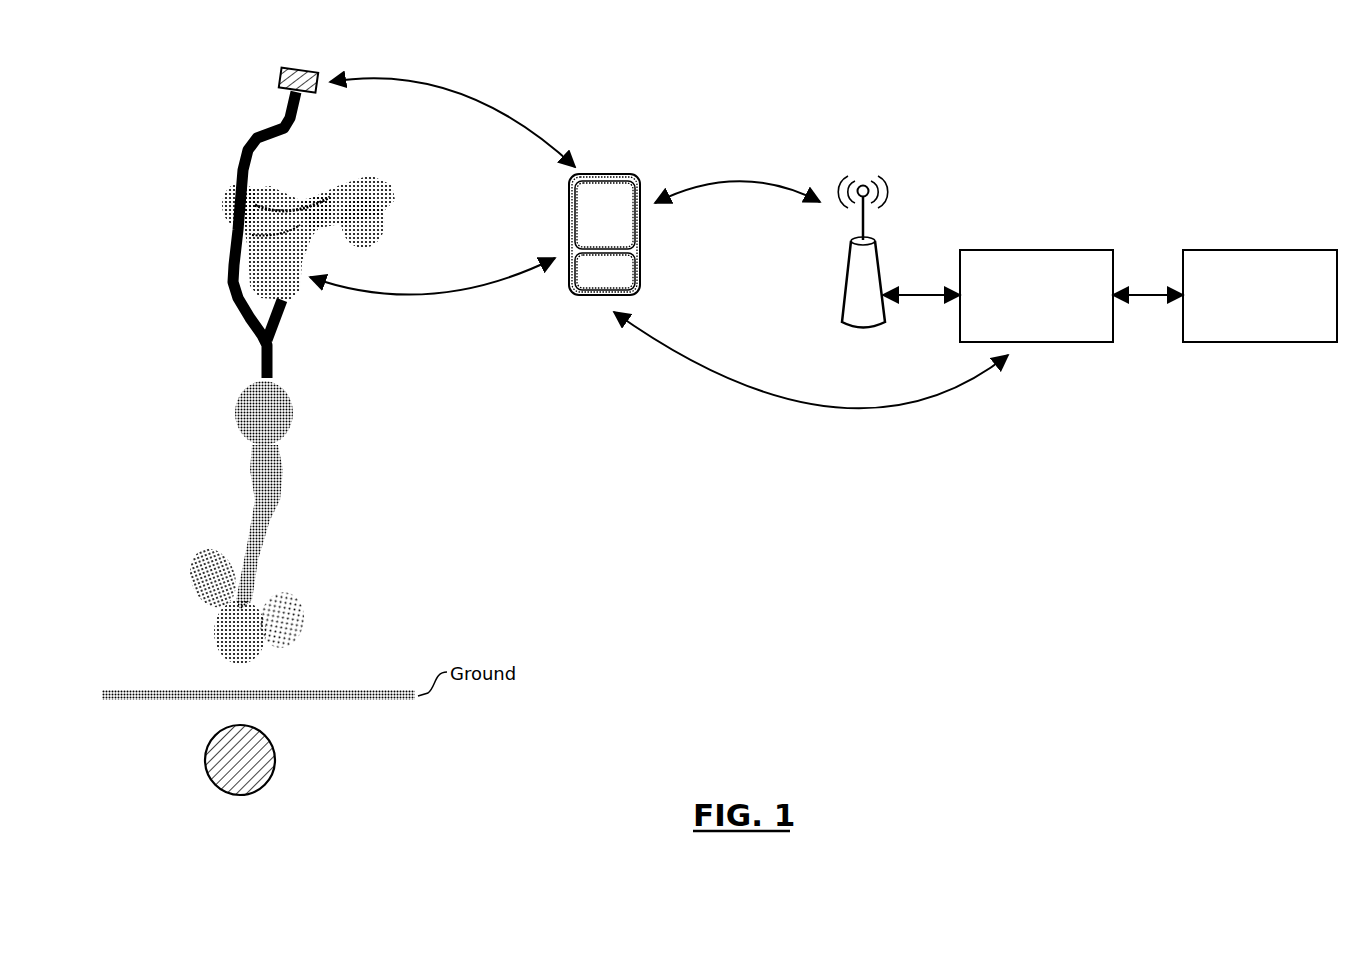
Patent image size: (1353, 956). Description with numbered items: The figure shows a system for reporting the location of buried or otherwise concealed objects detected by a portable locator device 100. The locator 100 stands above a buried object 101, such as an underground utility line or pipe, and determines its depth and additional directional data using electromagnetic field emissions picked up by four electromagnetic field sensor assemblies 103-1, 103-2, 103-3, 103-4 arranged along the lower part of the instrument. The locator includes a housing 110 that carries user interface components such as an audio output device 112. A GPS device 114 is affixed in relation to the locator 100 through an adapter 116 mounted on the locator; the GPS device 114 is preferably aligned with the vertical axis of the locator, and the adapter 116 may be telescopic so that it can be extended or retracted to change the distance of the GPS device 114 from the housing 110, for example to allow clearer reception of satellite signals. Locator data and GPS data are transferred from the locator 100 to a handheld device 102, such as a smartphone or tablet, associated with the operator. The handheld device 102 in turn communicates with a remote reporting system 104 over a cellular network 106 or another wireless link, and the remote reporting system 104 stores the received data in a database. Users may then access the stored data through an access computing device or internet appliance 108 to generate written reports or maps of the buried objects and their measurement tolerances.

The portable locator device 100 is at (197, 68).
The buried object 101 is at (277, 765).
The handheld device 102 is at (606, 178).
The electromagnetic field sensor assembly 103-1 is at (293, 405).
The electromagnetic field sensor assembly 103-2 is at (212, 640).
The electromagnetic field sensor assembly 103-3 is at (203, 560).
The electromagnetic field sensor assembly 103-4 is at (298, 597).
The remote reporting system 104 is at (1037, 250).
The cellular network 106 is at (877, 270).
The access computing device 108 is at (1262, 250).
The housing 110 is at (275, 193).
The audio output device 112 is at (378, 178).
The GPS device 114 is at (280, 76).
The adapter 116 is at (240, 165).